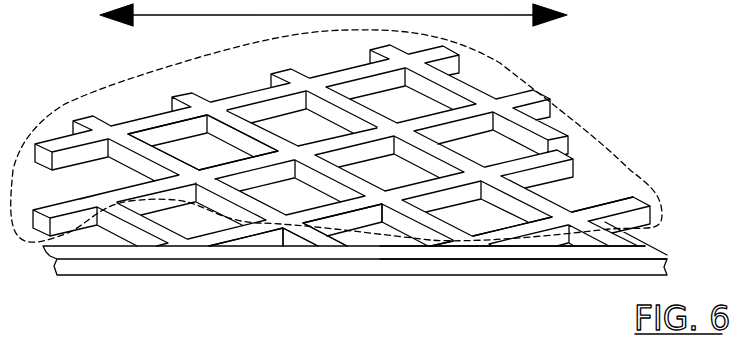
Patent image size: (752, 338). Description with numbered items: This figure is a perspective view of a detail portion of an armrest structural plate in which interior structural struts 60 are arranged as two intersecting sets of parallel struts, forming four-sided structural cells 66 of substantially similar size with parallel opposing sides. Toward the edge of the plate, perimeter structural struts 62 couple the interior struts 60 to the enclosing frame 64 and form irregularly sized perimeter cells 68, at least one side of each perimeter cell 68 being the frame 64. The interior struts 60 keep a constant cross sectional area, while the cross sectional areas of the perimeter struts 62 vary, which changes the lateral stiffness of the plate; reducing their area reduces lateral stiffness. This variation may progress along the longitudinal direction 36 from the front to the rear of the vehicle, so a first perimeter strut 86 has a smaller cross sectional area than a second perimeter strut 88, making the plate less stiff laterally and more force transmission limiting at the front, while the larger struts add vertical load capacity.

The longitudinal direction 36 is at (500, 24).
The interior structural struts 60 is at (115, 128).
The perimeter structural struts 62 is at (322, 238).
The frame 64 is at (413, 252).
The structural cells 66 is at (180, 153).
The perimeter cells 68 is at (275, 240).
The first perimeter strut 86 is at (520, 230).
The second perimeter strut 88 is at (152, 225).